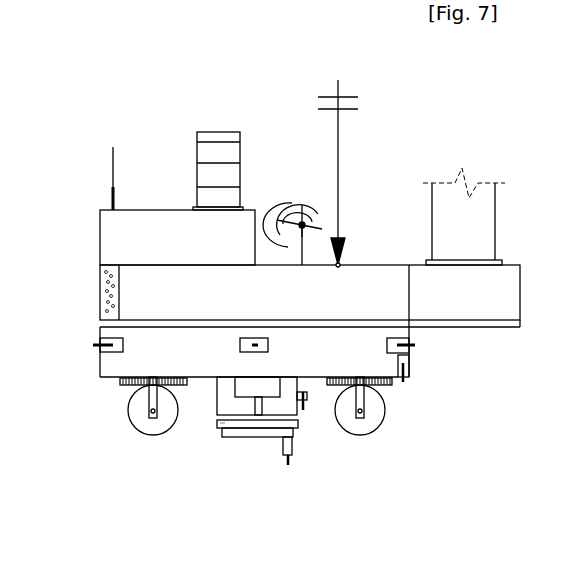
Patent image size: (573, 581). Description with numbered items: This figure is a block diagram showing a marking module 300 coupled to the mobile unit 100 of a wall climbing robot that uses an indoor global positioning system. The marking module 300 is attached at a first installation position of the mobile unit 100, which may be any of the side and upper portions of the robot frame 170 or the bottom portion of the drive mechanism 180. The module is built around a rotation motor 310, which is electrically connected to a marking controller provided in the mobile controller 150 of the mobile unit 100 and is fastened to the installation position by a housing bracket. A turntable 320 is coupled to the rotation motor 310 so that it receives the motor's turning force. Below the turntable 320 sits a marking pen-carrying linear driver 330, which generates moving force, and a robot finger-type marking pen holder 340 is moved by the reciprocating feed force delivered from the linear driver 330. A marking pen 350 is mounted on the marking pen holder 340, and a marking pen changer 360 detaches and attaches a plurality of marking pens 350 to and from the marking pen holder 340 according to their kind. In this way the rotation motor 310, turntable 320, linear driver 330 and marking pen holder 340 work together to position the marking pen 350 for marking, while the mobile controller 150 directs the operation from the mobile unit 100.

The mobile unit 100 is at (452, 142).
The mobile controller 150 is at (359, 280).
The robot frame 170 is at (408, 323).
The drive mechanism 180 is at (113, 363).
The marking module 300 is at (228, 372).
The rotation motor 310 is at (213, 425).
The turntable 320 is at (217, 385).
The linear driver 330 is at (243, 437).
The marking pen holder 340 is at (293, 446).
The marking pen 350 is at (284, 468).
The marking pen changer 360 is at (310, 396).